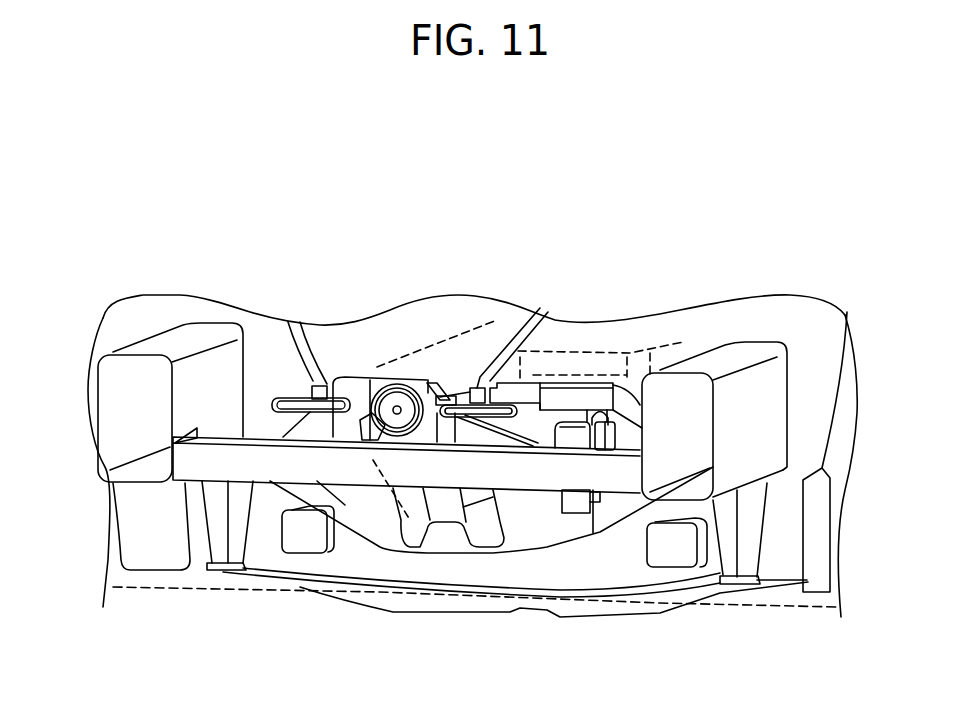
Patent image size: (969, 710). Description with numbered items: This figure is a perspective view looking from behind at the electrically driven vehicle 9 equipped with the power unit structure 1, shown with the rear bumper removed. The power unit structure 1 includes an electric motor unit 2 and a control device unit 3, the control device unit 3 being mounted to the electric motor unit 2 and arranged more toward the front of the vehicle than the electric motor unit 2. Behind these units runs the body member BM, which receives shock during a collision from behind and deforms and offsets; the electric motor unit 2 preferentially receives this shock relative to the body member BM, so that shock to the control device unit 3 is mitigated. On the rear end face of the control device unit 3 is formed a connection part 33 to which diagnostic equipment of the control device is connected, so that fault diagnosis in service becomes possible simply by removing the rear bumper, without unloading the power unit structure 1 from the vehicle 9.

The electrically driven vehicle 9 is at (712, 220).
The body member BM is at (523, 473).
The power unit structure 1 is at (552, 368).
The electric motor unit 2 is at (470, 378).
The control device unit 3 is at (588, 393).
The connection part 33 is at (613, 421).